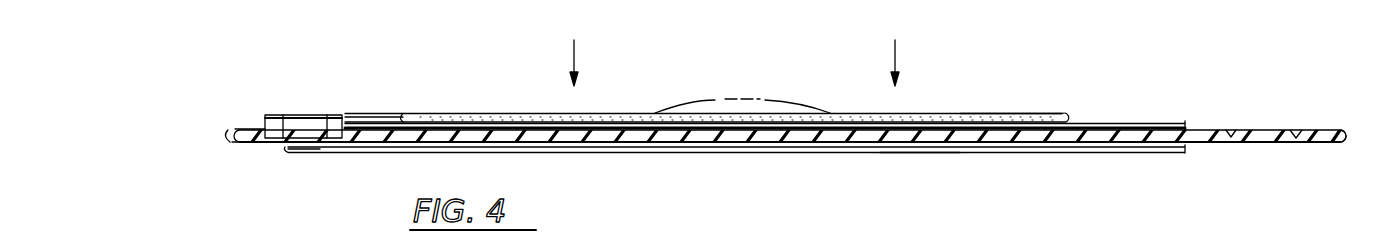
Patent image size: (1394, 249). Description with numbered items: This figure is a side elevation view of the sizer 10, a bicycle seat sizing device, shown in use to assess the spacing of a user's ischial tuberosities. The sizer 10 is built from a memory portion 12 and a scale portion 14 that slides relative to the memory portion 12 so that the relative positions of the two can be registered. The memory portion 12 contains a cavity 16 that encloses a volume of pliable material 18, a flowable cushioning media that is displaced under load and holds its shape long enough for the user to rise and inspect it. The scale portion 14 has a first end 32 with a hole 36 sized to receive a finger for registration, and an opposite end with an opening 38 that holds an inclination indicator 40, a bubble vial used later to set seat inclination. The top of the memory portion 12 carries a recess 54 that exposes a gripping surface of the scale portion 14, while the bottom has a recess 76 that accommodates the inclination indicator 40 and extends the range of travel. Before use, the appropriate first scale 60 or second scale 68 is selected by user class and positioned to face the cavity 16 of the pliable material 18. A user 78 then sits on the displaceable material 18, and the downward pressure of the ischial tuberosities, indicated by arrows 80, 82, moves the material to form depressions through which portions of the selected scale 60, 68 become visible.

The sizer 10 is at (1316, 48).
The memory portion 12 is at (342, 153).
The scale portion 14 is at (232, 132).
The cavity 16 is at (1045, 112).
The pliable material 18 is at (1066, 123).
The first end 32 is at (1356, 128).
The hole 36 is at (1240, 130).
The opening 38 is at (260, 141).
The inclination indicator 40 is at (300, 115).
The recess 54 is at (388, 120).
The first scale 60 is at (1000, 103).
The second scale 68 is at (904, 151).
The recess 76 is at (303, 152).
The user 78 is at (737, 97).
The arrow 80 is at (574, 44).
The arrow 82 is at (895, 44).